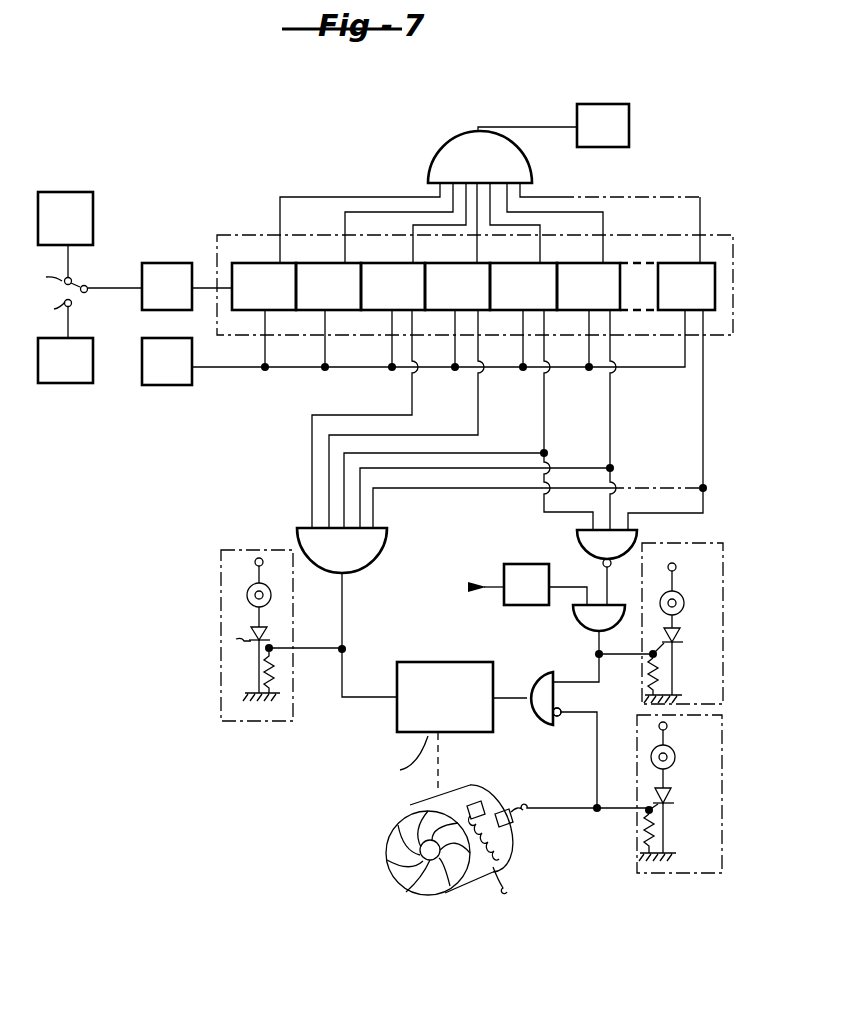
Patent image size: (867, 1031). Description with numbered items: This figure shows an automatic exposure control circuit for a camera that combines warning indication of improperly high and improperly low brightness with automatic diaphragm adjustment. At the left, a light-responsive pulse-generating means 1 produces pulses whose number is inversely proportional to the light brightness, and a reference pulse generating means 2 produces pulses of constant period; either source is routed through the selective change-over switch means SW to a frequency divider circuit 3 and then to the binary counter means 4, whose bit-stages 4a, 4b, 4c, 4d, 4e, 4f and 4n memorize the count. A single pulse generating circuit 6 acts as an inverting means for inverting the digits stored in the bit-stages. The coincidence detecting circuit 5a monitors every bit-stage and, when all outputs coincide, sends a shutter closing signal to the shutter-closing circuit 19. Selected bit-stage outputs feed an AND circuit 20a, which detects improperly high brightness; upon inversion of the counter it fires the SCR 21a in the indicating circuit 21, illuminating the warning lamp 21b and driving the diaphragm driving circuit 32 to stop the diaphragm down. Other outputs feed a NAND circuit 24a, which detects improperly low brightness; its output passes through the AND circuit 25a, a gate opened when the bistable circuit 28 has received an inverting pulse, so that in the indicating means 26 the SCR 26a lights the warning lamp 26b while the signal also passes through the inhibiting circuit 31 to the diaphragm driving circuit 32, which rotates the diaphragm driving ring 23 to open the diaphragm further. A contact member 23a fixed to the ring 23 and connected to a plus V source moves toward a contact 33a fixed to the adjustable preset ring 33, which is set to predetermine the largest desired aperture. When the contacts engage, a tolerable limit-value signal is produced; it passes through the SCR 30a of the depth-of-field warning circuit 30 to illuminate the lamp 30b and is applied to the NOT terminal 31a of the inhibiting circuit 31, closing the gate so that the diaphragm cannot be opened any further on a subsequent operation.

The light-responsive pulse-generating means 1 is at (70, 231).
The reference pulse generating means 2 is at (70, 373).
The frequency divider circuit 3 is at (172, 298).
The single pulse generating circuit 6 is at (172, 373).
The shutter-closing circuit 19 is at (612, 138).
The coincidence detecting circuit 5a is at (490, 175).
The binary counter means 4 is at (721, 243).
The bit-stage 4a is at (272, 301).
The bit-stage 4b is at (336, 301).
The bit-stage 4c is at (400, 301).
The bit-stage 4d is at (465, 301).
The bit-stage 4e is at (533, 301).
The bit-stage 4f is at (595, 301).
The bit-stage 4n is at (694, 301).
The AND circuit 20a is at (355, 561).
The NAND circuit 24a is at (578, 534).
The AND circuit 25a is at (612, 625).
The bistable circuit 28 is at (536, 595).
The inhibiting circuit 31 is at (544, 678).
The NOT terminal 31a is at (559, 717).
The diaphragm driving circuit 32 is at (465, 707).
The warning indicating circuit 21 is at (262, 722).
The SCR 21a is at (248, 647).
The warning lamp 21b is at (250, 600).
The indicating means 26 is at (716, 573).
The SCR 26a is at (680, 640).
The warning lamp 26b is at (684, 604).
The depth-of-field warning circuit 30 is at (692, 875).
The SCR 30a is at (672, 800).
The warning lamp 30b is at (675, 758).
The diaphragm driving ring 23 is at (412, 878).
The contact member 23a is at (478, 803).
The adjustable preset ring 33 is at (495, 805).
The contact 33a is at (518, 818).
The selective change-over switch means SW is at (87, 290).